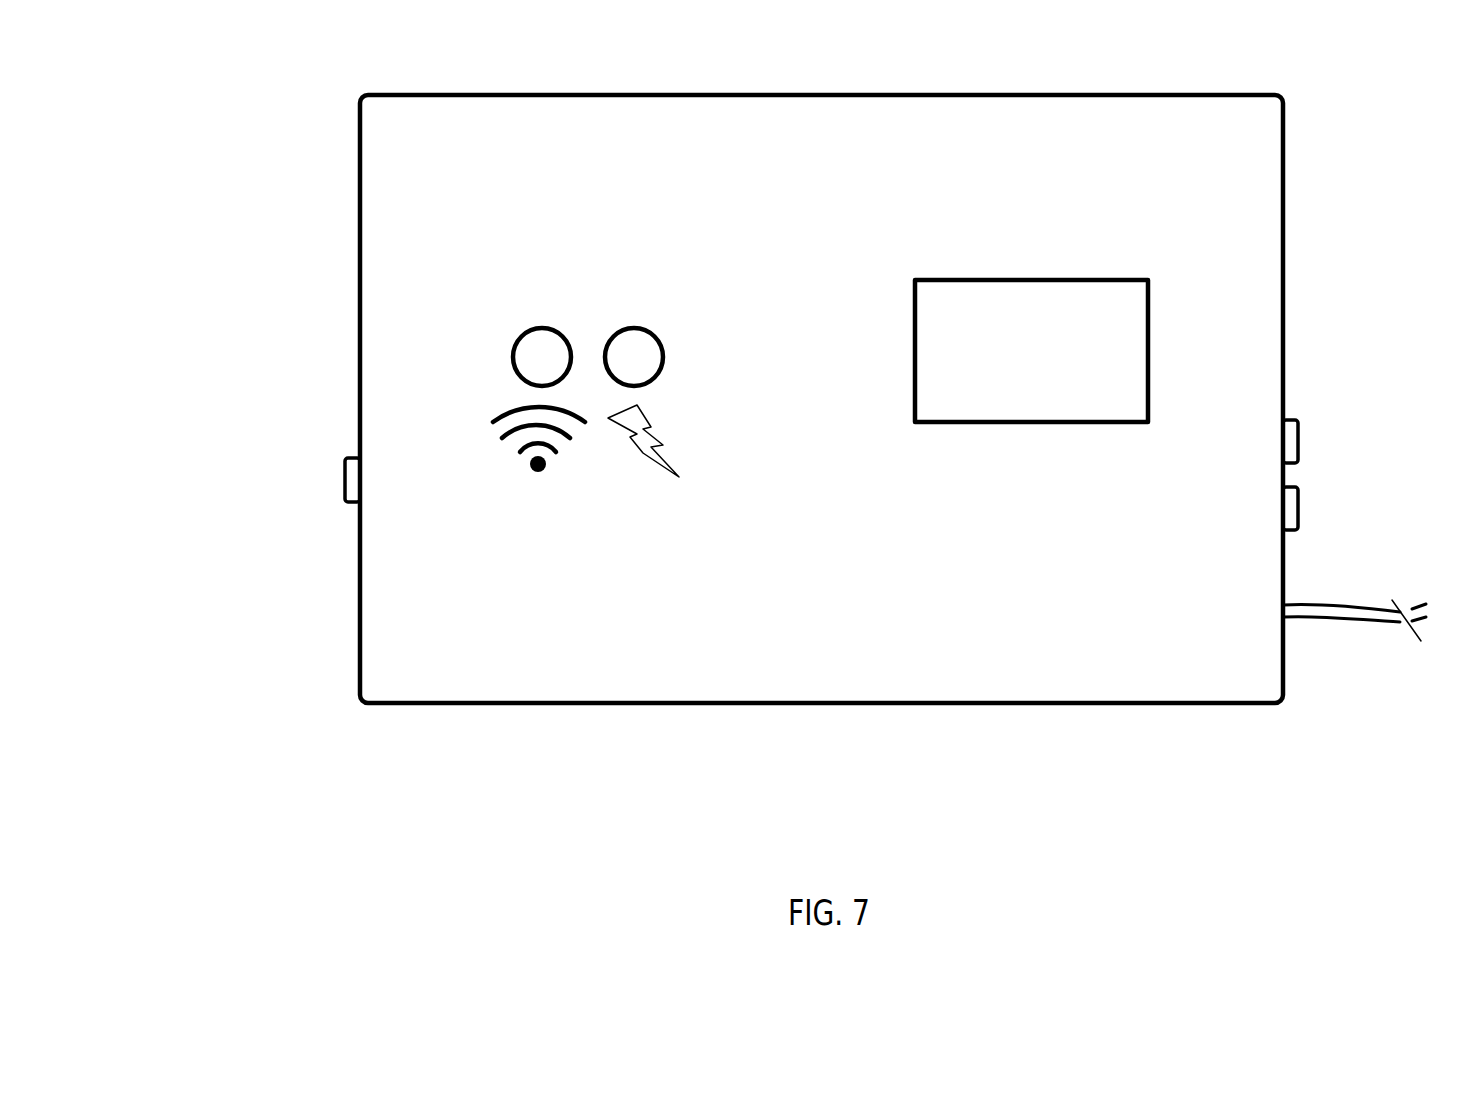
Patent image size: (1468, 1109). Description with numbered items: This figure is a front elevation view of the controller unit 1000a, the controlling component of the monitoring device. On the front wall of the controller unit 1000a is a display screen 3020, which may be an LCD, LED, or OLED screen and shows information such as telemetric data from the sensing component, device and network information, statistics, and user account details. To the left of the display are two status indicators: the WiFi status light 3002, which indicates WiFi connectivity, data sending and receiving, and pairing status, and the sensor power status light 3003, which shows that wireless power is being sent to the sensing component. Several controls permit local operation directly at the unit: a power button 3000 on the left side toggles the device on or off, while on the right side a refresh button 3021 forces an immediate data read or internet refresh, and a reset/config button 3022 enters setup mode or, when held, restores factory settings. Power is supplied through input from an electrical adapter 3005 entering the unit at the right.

The controller unit 1000a is at (1046, 570).
The power button 3000 is at (347, 478).
The WiFi status light 3002 is at (528, 357).
The sensor power status light 3003 is at (633, 326).
The display screen 3020 is at (1031, 338).
The refresh button 3021 is at (1298, 442).
The reset/config button 3022 is at (1298, 507).
The electrical adapter 3005 is at (1335, 613).